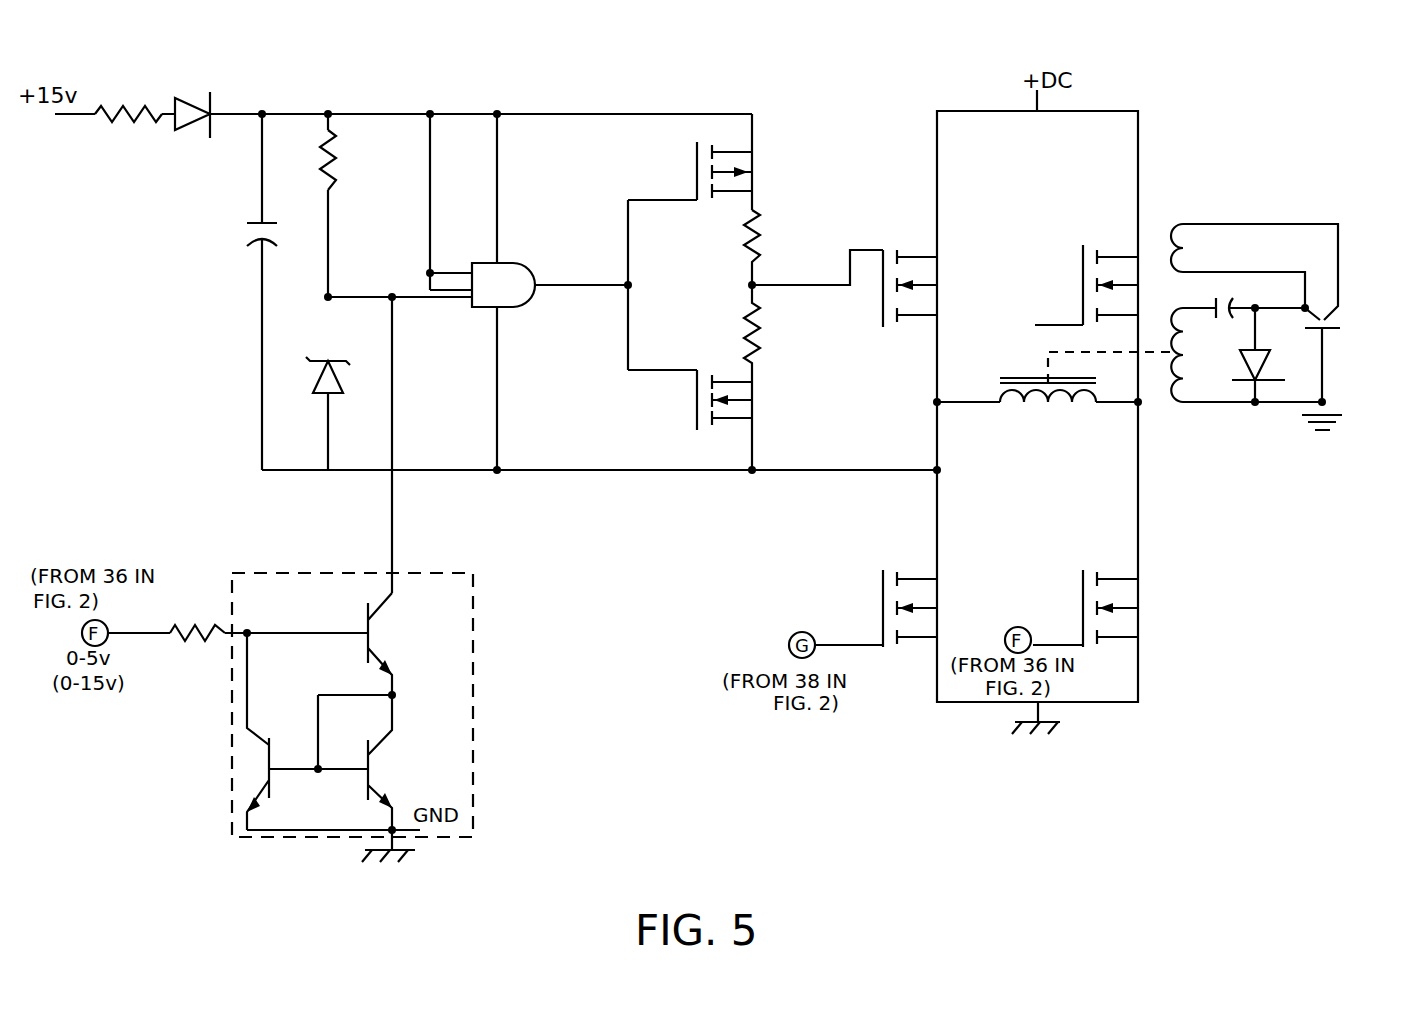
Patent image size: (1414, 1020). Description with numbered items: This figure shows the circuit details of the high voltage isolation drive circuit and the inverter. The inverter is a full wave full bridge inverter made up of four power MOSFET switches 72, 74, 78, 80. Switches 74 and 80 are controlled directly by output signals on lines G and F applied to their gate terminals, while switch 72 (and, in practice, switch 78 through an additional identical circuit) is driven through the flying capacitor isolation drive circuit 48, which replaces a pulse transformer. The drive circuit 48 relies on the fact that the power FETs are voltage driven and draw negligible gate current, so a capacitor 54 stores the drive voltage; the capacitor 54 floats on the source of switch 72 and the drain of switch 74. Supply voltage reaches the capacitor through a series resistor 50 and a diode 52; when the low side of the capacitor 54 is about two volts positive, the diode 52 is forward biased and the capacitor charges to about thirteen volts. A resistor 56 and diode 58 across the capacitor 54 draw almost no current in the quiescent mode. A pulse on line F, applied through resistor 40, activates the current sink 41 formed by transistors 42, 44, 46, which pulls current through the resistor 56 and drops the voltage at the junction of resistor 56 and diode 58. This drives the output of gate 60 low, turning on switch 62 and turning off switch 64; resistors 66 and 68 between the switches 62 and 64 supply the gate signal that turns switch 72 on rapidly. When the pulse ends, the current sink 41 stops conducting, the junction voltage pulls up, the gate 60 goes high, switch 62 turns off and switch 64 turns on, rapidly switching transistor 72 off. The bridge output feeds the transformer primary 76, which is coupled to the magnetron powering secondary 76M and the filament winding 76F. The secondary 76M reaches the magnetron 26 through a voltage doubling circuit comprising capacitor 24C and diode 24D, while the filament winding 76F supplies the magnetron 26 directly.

The resistor 50 is at (122, 112).
The diode 52 is at (178, 128).
The capacitor 54 is at (262, 236).
The resistor 56 is at (332, 176).
The diode 58 is at (328, 362).
The gate 60 is at (503, 285).
The flying capacitor isolation drive circuit 48 is at (572, 227).
The switch 62 is at (697, 165).
The switch 64 is at (697, 410).
The resistor 66 is at (750, 320).
The resistor 68 is at (748, 225).
The MOSFET switch 72 is at (883, 290).
The MOSFET switch 74 is at (883, 600).
The MOSFET switch 78 is at (1083, 270).
The MOSFET switch 80 is at (1083, 600).
The primary 76 is at (1046, 414).
The filament winding 76F is at (1183, 228).
The magnetron powering secondary 76M is at (1183, 402).
The capacitor 24C is at (1216, 320).
The diode 24D is at (1250, 378).
The magnetron 26 is at (1342, 318).
The resistor 40 is at (225, 640).
The current sink 41 is at (473, 655).
The transistor 42 is at (269, 740).
The transistor 44 is at (372, 632).
The transistor 46 is at (372, 772).